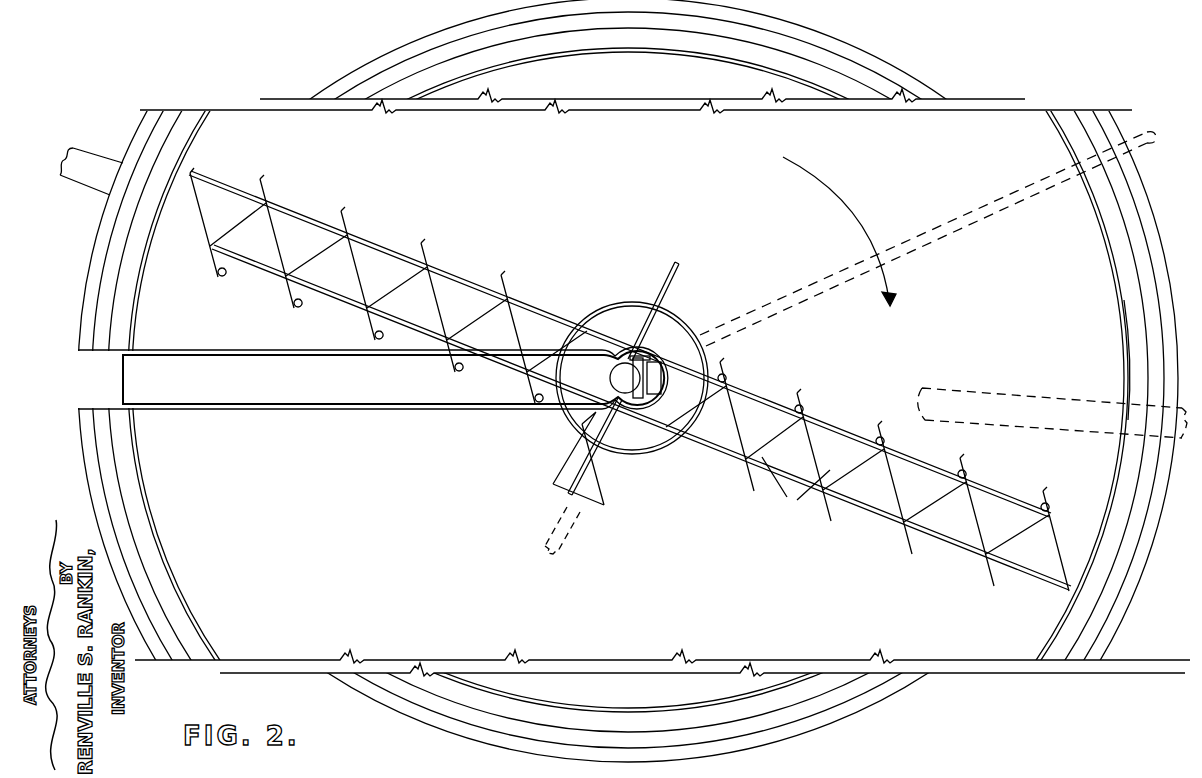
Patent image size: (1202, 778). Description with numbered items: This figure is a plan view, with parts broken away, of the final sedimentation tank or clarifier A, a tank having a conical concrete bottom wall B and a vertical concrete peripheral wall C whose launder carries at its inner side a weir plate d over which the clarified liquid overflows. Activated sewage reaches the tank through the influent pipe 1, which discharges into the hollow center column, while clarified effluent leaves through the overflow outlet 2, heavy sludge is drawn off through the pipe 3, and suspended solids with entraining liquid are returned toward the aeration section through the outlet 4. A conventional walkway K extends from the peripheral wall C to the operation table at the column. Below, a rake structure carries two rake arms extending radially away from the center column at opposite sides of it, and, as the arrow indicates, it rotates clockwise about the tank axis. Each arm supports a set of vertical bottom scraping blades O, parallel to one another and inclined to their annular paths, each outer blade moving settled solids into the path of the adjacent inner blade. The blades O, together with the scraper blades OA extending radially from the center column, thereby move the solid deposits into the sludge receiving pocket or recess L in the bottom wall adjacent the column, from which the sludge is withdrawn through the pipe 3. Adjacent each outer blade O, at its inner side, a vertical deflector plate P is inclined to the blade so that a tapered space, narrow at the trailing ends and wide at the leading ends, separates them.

The influent pipe 1 is at (300, 210).
The overflow outlet 2 is at (110, 160).
The sludge outlet pipe 3 is at (576, 530).
The outlet for suspended solids 4 is at (1142, 150).
The final sedimentation tank or clarifier A is at (178, 293).
The conical concrete bottom wall B is at (985, 335).
The vertical concrete peripheral wall C is at (1122, 199).
The weir plate d is at (1130, 356).
The walkway K is at (276, 397).
The sludge receiving pocket or recess L is at (556, 470).
The bottom scraping blades O is at (312, 316).
The scraper blades OA is at (672, 278).
The vertical deflector plates P is at (796, 489).